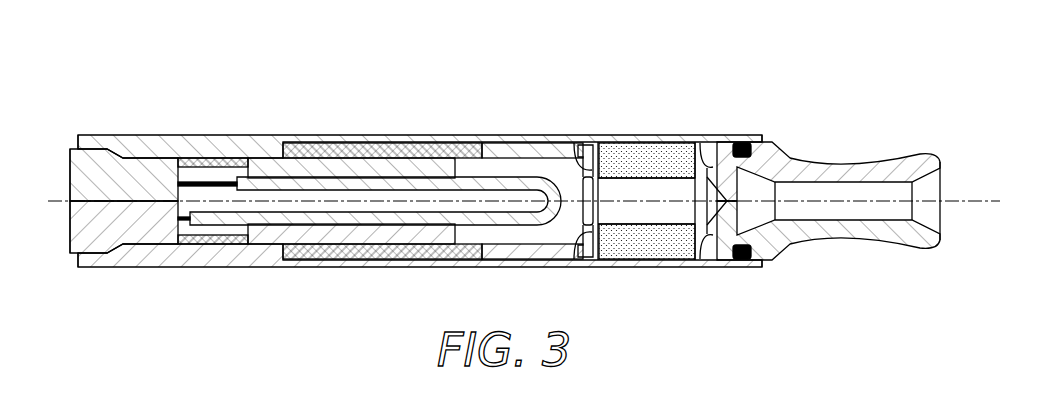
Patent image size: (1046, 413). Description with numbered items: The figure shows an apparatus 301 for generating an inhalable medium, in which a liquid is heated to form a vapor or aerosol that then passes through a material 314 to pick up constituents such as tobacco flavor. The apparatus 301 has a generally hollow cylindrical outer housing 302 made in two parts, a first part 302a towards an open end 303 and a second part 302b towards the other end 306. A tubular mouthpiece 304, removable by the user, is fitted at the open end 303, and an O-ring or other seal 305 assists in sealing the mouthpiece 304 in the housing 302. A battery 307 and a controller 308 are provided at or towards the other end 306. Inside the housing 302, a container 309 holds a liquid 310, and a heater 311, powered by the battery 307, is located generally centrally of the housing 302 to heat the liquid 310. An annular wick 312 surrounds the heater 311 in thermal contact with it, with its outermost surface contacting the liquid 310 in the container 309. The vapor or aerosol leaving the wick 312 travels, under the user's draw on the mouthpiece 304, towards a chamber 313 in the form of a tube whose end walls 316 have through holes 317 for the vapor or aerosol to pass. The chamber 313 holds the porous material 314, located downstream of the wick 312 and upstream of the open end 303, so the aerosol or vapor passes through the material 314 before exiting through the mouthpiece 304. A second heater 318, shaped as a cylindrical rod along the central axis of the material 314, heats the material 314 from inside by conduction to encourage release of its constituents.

The apparatus 301 is at (495, 97).
The outer housing 302 is at (217, 135).
The first part of housing 302a is at (759, 135).
The second part of housing 302b is at (118, 135).
The open end 303 is at (771, 133).
The tubular mouthpiece 304 is at (872, 159).
The seal 305 is at (744, 257).
The other end 306 is at (70, 272).
The battery 307 is at (141, 232).
The controller 308 is at (208, 250).
The container 309 is at (387, 147).
The liquid 310 is at (449, 149).
The heater 311 is at (303, 222).
The annular wick 312 is at (318, 168).
The chamber 313 is at (622, 258).
The material 314 is at (670, 240).
The end walls 316 is at (590, 252).
The through holes 317 is at (586, 168).
The second heater 318 is at (640, 186).